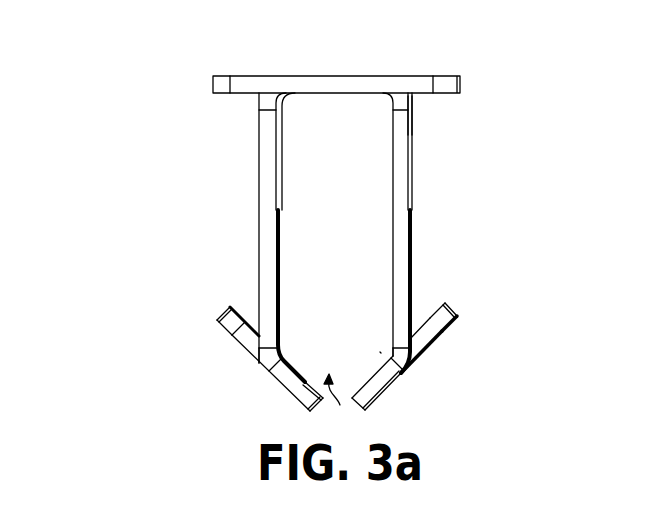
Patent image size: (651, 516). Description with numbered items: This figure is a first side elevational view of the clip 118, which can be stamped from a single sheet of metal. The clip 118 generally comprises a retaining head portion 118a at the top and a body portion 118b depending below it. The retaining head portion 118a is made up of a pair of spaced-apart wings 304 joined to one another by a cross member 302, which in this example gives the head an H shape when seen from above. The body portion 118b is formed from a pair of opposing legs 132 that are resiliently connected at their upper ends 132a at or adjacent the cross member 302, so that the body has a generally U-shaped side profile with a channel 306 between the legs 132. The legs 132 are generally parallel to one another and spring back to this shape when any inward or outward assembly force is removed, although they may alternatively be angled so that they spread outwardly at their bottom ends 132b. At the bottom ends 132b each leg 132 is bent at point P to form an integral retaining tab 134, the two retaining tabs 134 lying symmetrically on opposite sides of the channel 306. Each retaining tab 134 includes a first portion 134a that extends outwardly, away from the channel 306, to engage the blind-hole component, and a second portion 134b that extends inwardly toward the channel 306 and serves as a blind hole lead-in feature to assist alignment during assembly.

The clip 118 is at (77, 60).
The retaining head portion 118a is at (474, 63).
The body portion 118b is at (153, 95).
The cross member 302 is at (352, 74).
The wings 304 is at (238, 73).
The legs 132 is at (260, 242).
The upper ends 132a is at (418, 117).
The bottom ends 132b is at (352, 372).
The retaining tabs 134 is at (517, 295).
The first portion 134a is at (217, 312).
The second portion 134b is at (285, 383).
The channel 306 is at (340, 401).
The point P is at (380, 352).